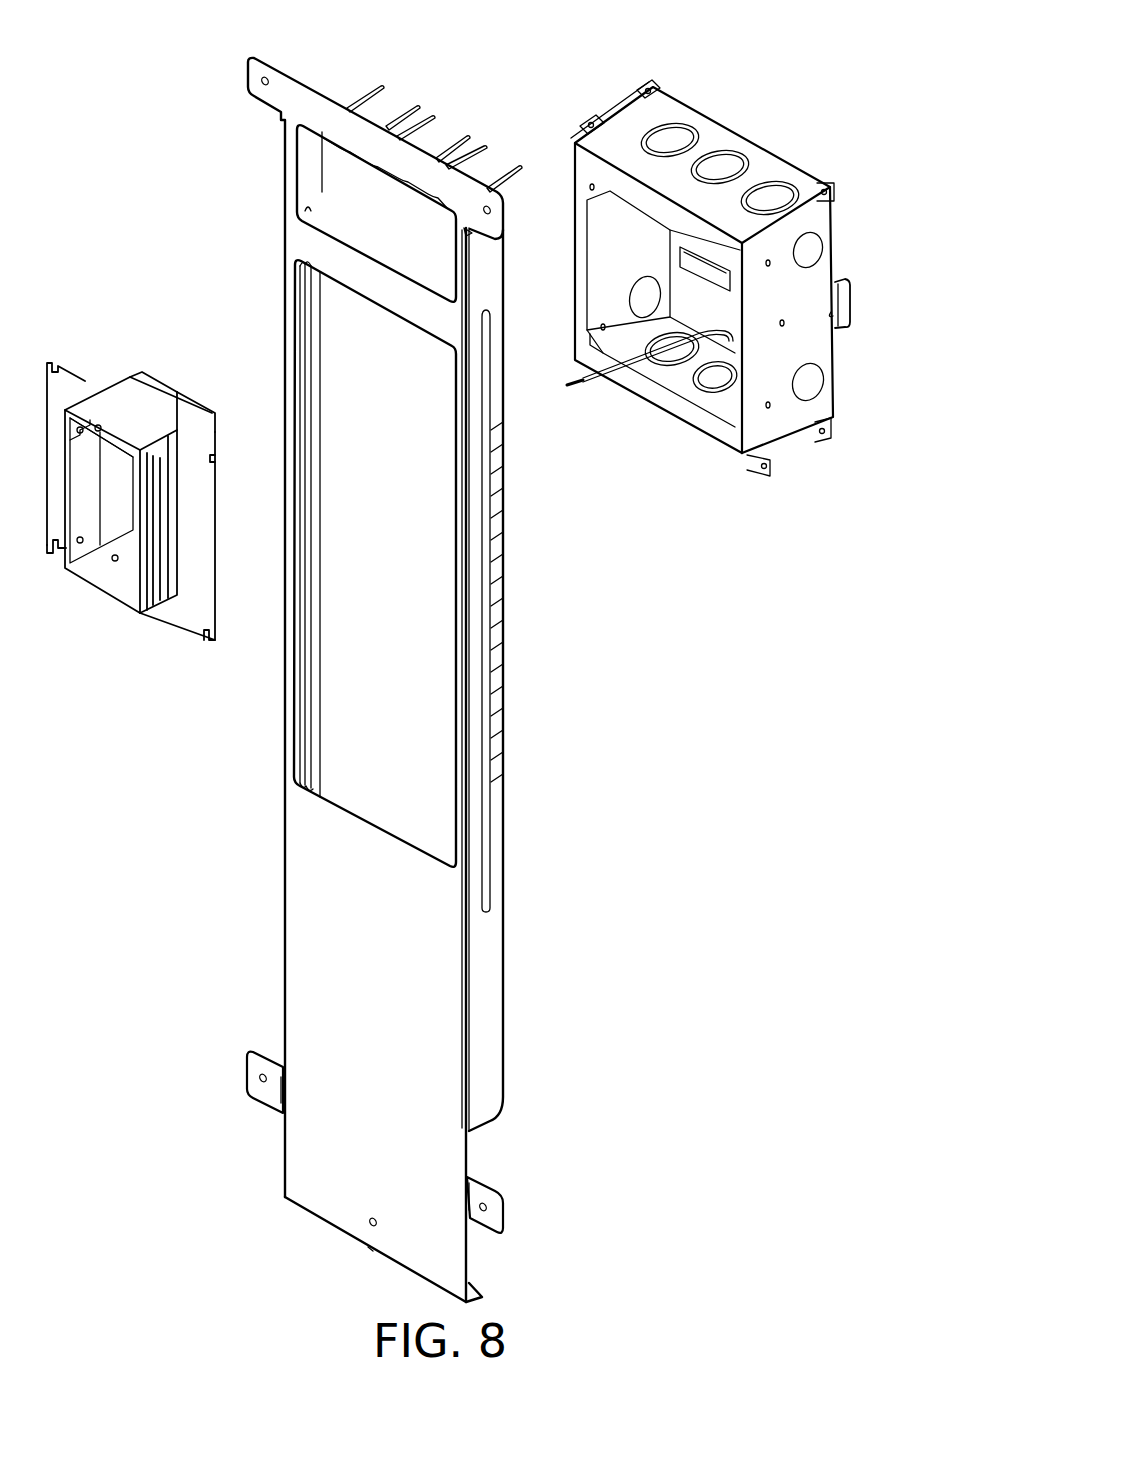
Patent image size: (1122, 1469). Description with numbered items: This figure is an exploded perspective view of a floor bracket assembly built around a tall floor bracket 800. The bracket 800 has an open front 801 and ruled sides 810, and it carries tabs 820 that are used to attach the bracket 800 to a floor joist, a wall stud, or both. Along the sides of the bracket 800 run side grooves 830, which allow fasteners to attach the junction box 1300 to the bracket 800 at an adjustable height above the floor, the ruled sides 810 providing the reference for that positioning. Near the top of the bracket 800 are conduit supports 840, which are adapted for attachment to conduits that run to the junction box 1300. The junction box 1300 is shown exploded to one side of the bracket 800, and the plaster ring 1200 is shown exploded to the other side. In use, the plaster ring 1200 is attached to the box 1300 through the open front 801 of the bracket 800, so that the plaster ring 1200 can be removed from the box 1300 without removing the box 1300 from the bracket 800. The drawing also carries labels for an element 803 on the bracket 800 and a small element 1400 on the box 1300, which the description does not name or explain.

The floor bracket 800 is at (258, 55).
The open front 801 is at (443, 450).
The upper opening 803 is at (477, 270).
The ruled sides 810 is at (503, 541).
The tabs 820 is at (498, 217).
The side grooves 830 is at (303, 353).
The conduit supports 840 is at (448, 143).
The plaster ring 1200 is at (80, 373).
The junction box 1300 is at (730, 137).
The clip 1400 is at (850, 300).